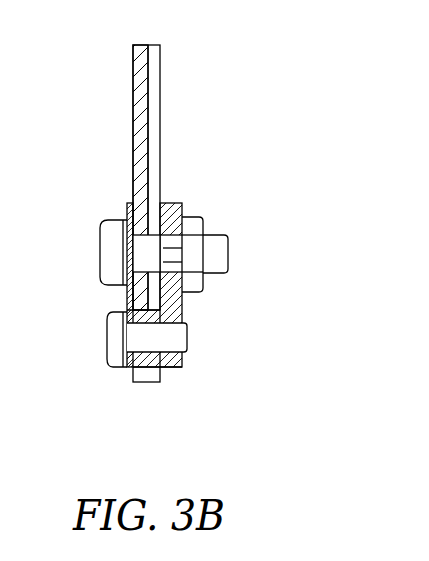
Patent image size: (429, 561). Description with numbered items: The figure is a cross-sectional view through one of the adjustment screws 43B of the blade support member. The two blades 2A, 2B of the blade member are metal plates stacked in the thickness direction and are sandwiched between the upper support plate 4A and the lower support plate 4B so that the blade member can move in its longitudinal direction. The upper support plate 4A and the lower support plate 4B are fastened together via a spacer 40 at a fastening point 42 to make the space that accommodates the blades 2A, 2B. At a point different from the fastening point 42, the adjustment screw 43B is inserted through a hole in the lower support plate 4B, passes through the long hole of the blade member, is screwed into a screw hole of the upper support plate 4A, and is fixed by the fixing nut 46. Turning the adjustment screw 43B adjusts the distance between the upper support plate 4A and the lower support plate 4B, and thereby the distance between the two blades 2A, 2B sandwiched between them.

The blade 2A is at (162, 67).
The blade 2B is at (133, 108).
The upper support plate 4A is at (168, 204).
The lower support plate 4B is at (126, 205).
The spacer 40 is at (148, 382).
The fastening point 42 is at (188, 334).
The adjustment screw 43B is at (228, 236).
The fixing nut 46 is at (185, 216).